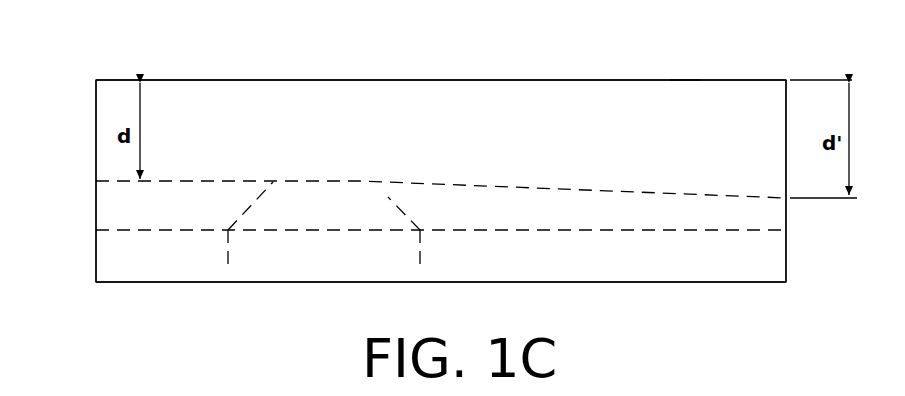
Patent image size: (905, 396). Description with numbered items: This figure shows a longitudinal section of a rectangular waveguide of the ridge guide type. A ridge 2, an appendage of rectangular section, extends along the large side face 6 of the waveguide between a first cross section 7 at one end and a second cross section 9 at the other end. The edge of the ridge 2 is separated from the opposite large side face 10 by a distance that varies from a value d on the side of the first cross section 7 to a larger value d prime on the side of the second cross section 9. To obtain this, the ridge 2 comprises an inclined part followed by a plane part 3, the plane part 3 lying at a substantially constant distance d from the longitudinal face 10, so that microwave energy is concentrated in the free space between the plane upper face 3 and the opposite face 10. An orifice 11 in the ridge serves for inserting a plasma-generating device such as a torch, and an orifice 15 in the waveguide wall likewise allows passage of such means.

The ridge 2 is at (114, 211).
The plane part 3 is at (228, 180).
The large side face 6 is at (726, 285).
The first cross section 7 is at (793, 96).
The second cross section 9 is at (82, 134).
The large side face 10 is at (688, 80).
The orifice 11 is at (376, 182).
The orifice 15 is at (373, 80).